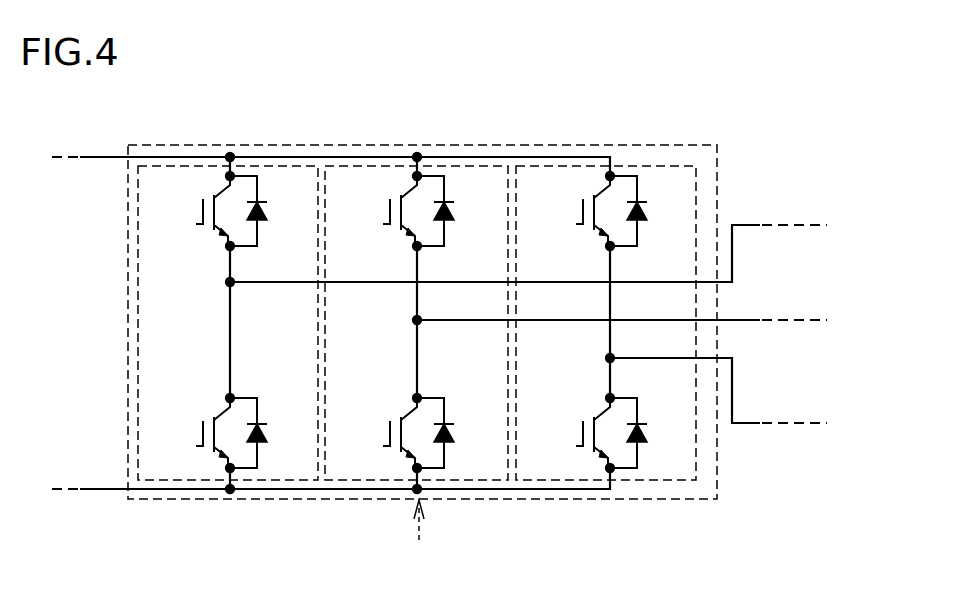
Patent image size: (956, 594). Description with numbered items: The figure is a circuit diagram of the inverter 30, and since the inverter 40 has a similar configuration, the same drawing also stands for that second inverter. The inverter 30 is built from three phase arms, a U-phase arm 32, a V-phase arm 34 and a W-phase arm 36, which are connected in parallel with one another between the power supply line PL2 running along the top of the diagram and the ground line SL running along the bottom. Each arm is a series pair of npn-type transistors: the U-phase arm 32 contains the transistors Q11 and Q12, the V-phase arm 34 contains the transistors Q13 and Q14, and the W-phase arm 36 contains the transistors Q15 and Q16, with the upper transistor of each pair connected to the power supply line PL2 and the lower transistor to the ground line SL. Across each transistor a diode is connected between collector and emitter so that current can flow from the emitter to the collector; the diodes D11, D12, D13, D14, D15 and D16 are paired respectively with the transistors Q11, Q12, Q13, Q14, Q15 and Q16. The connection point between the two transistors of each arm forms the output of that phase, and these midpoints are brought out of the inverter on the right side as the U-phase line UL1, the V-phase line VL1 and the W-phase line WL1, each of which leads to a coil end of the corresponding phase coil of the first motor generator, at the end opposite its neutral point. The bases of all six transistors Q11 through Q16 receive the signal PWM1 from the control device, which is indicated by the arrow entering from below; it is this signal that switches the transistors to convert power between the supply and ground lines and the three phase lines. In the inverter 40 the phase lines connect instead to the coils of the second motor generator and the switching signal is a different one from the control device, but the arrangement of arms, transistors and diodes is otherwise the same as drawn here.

The inverter 30 is at (457, 283).
The inverter 40 is at (720, 140).
The U-phase arm 32 is at (291, 165).
The V-phase arm 34 is at (481, 165).
The W-phase arm 36 is at (669, 165).
The npn-type transistor Q11 is at (192, 211).
The npn-type transistor Q12 is at (192, 433).
The npn-type transistor Q13 is at (379, 211).
The npn-type transistor Q14 is at (379, 433).
The npn-type transistor Q15 is at (572, 211).
The npn-type transistor Q16 is at (572, 433).
The diode D11 is at (270, 216).
The diode D12 is at (270, 439).
The diode D13 is at (457, 216).
The diode D14 is at (457, 439).
The diode D15 is at (650, 216).
The diode D16 is at (650, 439).
The power supply line PL2 is at (100, 155).
The ground line SL is at (100, 487).
The U-phase line UL1 is at (755, 222).
The V-phase line VL1 is at (755, 318).
The W-phase line WL1 is at (755, 421).
The signal PWM1 is at (413, 539).